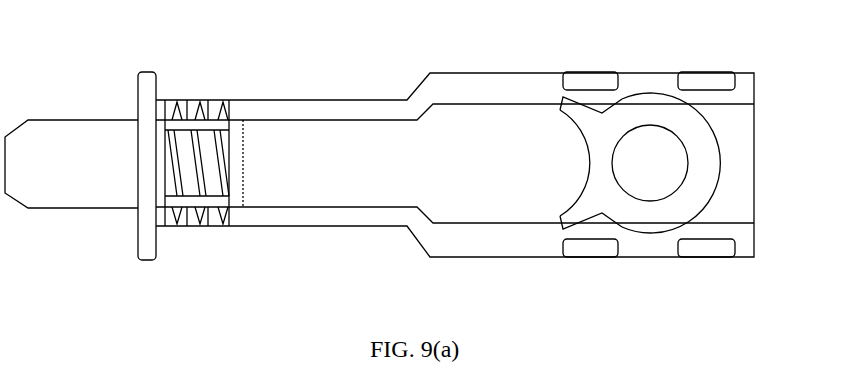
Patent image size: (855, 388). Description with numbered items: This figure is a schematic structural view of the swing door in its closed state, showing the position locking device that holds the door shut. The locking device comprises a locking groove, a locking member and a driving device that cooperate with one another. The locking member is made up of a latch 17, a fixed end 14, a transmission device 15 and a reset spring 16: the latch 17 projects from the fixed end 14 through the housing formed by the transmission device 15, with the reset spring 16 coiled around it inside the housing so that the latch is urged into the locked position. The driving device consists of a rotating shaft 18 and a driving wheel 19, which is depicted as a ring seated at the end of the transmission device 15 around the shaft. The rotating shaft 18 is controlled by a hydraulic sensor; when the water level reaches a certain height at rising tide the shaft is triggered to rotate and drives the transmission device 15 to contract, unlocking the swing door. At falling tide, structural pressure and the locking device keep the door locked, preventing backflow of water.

The fixed end 14 is at (602, 72).
The transmission device 15 is at (512, 72).
The reset spring 16 is at (183, 115).
The latch 17 is at (70, 122).
The rotating shaft 18 is at (647, 174).
The driving wheel 19 is at (690, 133).